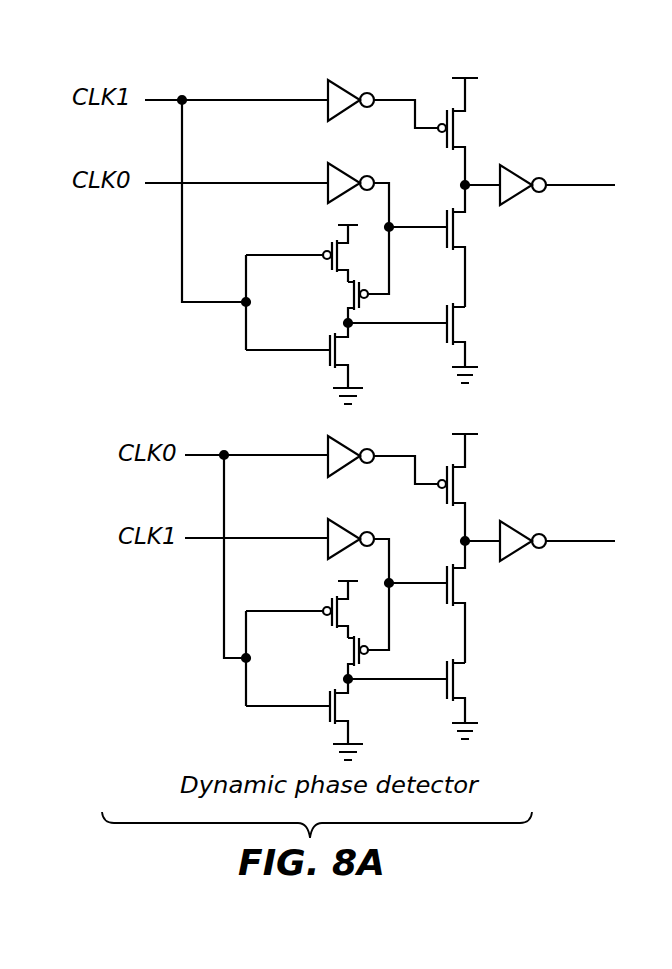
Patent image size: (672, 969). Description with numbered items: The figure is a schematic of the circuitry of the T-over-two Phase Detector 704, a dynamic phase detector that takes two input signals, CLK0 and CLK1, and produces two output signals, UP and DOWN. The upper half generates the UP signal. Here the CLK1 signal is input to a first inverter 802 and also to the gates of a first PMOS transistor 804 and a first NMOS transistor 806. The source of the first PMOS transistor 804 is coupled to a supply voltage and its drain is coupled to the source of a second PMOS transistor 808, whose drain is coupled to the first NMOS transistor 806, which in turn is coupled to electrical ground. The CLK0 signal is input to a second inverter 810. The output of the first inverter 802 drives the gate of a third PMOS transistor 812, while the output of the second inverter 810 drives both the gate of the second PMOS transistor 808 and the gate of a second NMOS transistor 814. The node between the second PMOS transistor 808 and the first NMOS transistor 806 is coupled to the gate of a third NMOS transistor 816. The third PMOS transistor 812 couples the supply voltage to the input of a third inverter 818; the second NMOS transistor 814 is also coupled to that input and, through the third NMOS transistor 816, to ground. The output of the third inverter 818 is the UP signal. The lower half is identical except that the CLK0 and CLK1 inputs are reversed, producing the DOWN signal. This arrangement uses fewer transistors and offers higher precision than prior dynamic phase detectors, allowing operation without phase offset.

The first inverter 802 is at (326, 90).
The second inverter 810 is at (326, 172).
The first PMOS transistor 804 is at (331, 246).
The second PMOS transistor 808 is at (346, 297).
The first NMOS transistor 806 is at (331, 366).
The third PMOS transistor 812 is at (455, 125).
The second NMOS transistor 814 is at (455, 226).
The third NMOS transistor 816 is at (455, 327).
The third inverter 818 is at (517, 170).
The T/2 Phase Detector 704 is at (547, 869).